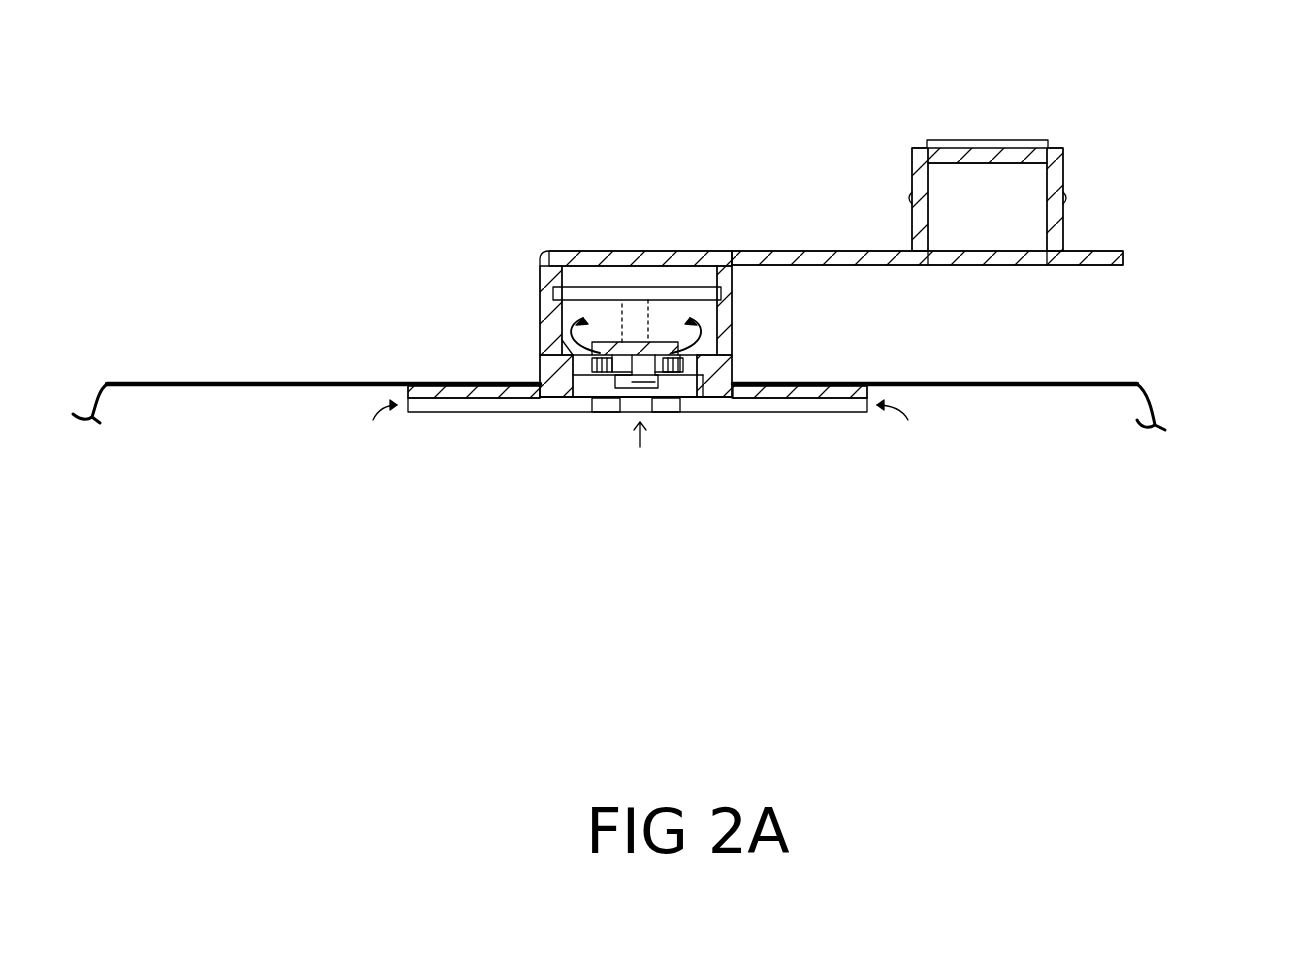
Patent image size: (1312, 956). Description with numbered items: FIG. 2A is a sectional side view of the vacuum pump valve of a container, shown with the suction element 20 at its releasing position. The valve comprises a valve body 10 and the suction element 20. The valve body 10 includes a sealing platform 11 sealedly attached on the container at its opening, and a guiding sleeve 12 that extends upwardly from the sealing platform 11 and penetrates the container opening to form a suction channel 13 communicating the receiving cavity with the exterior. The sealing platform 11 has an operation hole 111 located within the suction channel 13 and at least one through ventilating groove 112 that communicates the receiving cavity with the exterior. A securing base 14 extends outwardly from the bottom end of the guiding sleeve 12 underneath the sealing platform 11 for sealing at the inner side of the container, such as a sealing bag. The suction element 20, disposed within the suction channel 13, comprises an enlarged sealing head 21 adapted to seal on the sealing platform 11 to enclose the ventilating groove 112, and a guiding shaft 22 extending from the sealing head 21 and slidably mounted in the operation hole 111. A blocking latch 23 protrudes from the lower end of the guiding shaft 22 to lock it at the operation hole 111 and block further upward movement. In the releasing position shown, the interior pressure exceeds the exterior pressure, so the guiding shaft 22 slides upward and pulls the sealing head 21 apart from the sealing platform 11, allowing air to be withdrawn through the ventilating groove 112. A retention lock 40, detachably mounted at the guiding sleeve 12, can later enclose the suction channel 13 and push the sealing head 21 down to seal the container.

The valve body 10 is at (523, 335).
The sealing platform 11 is at (697, 378).
The operation hole 111 is at (667, 345).
The ventilating groove 112 is at (673, 373).
The guiding sleeve 12 is at (548, 330).
The suction channel 13 is at (632, 330).
The securing base 14 is at (803, 392).
The suction element 20 is at (654, 330).
The sealing head 21 is at (620, 350).
The guiding shaft 22 is at (612, 378).
The blocking latch 23 is at (640, 395).
The retention lock 40 is at (1060, 172).